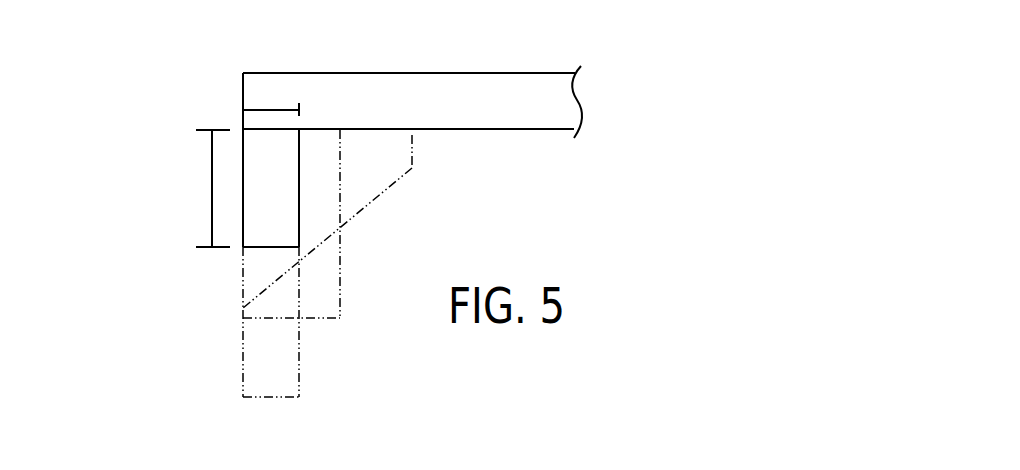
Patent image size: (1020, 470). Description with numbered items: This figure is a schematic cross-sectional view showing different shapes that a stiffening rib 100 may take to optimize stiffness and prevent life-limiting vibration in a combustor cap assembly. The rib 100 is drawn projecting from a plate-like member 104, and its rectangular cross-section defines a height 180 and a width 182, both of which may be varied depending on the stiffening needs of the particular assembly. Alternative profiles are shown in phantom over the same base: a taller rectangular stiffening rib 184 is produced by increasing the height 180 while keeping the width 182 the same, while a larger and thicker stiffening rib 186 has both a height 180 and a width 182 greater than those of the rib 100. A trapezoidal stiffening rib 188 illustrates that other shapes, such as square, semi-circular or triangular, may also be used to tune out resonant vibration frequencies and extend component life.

The stiffening rib 100 is at (161, 142).
The panel 104 is at (512, 97).
The height 180 is at (212, 190).
The width 182 is at (270, 106).
The taller rectangular stiffening rib 184 is at (243, 361).
The larger and thicker stiffening rib 186 is at (340, 293).
The trapezoidal stiffening rib 188 is at (378, 193).